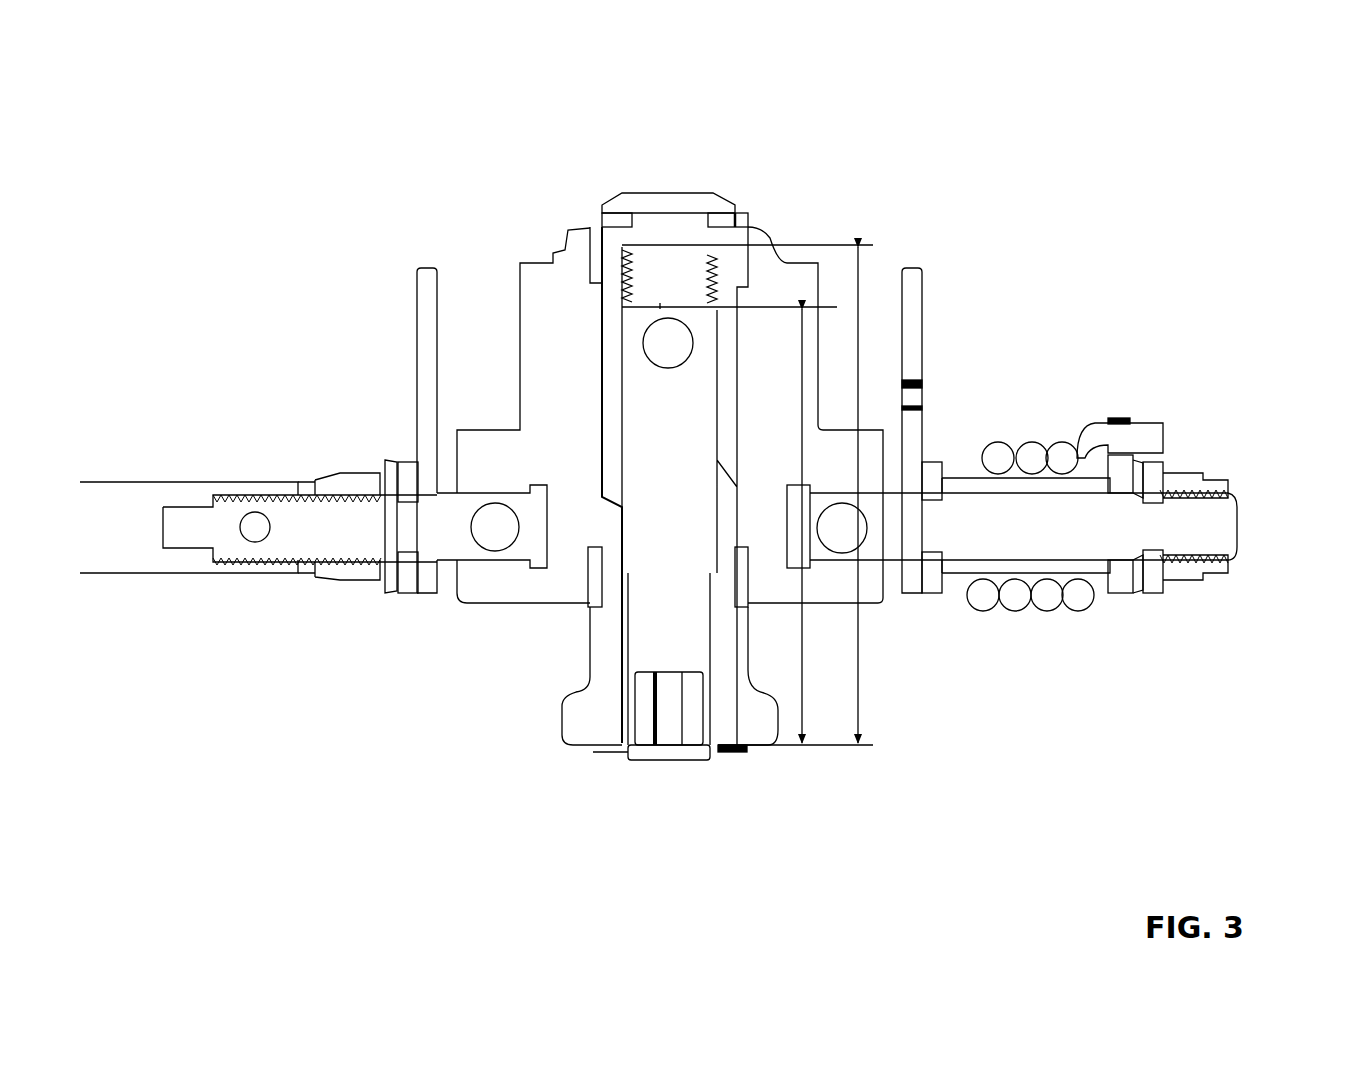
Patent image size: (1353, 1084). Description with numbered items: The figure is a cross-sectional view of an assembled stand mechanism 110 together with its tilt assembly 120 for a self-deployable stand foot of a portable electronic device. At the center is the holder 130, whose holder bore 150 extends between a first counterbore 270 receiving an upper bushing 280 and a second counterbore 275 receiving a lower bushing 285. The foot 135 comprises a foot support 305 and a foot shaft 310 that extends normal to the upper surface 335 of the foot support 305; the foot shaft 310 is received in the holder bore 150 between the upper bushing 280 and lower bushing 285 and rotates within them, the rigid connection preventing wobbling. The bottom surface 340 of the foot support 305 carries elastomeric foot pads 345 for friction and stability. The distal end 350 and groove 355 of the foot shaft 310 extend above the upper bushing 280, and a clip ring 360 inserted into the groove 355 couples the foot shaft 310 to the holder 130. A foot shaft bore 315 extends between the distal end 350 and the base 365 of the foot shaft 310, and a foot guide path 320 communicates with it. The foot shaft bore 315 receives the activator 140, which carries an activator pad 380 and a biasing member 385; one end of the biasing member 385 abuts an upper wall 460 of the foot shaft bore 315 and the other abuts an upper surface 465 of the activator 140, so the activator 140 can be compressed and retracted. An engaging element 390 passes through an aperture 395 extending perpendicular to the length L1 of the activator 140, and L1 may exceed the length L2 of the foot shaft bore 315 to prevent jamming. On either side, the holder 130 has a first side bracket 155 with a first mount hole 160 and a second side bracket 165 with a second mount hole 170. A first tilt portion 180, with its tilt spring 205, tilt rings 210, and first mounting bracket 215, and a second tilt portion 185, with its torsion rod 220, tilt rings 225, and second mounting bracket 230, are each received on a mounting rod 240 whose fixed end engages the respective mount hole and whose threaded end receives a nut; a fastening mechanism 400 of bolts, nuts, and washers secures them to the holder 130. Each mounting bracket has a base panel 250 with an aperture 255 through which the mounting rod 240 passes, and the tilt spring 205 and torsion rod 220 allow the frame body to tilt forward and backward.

The stand mechanism 110 is at (250, 162).
The tilt assembly 120 is at (1182, 453).
The holder 130 is at (602, 463).
The foot 135 is at (580, 720).
The activator 140 is at (725, 723).
The holder bore 150 is at (578, 330).
The first side bracket 155 is at (862, 612).
The first mount hole 160 is at (887, 553).
The second side bracket 165 is at (592, 284).
The second mount hole 170 is at (452, 486).
The first tilt portion 180 is at (1233, 612).
The second tilt portion 185 is at (460, 612).
The tilt spring 205 is at (1090, 455).
The tilt rings 210 is at (930, 560).
The first mounting bracket 215 is at (918, 300).
The torsion rod 220 is at (93, 537).
The tilt rings 225 is at (400, 597).
The second mounting bracket 230 is at (427, 430).
The mounting rod 240 is at (210, 537).
The base panel 250 is at (417, 298).
The aperture 255 is at (423, 567).
The first counterbore 270 is at (755, 232).
The second counterbore 275 is at (583, 578).
The upper bushing 280 is at (583, 258).
The lower bushing 285 is at (622, 590).
The foot support 305 is at (695, 628).
The foot shaft 310 is at (612, 412).
The foot shaft bore 315 is at (600, 428).
The foot guide path 320 is at (607, 440).
The upper surface 335 is at (575, 690).
The bottom surface 340 is at (612, 620).
The foot pads 345 is at (733, 750).
The distal end 350 is at (632, 214).
The groove 355 is at (600, 216).
The clip ring 360 is at (697, 193).
The base 365 is at (582, 604).
The activator pad 380 is at (658, 762).
The biasing member 385 is at (588, 230).
The engaging element 390 is at (672, 338).
The aperture 395 is at (616, 383).
The fastening mechanism 400 is at (367, 482).
The upper wall 460 is at (597, 300).
The upper surface 465 is at (610, 363).
The length of the activator L1 is at (803, 400).
The length of the foot shaft bore L2 is at (858, 330).